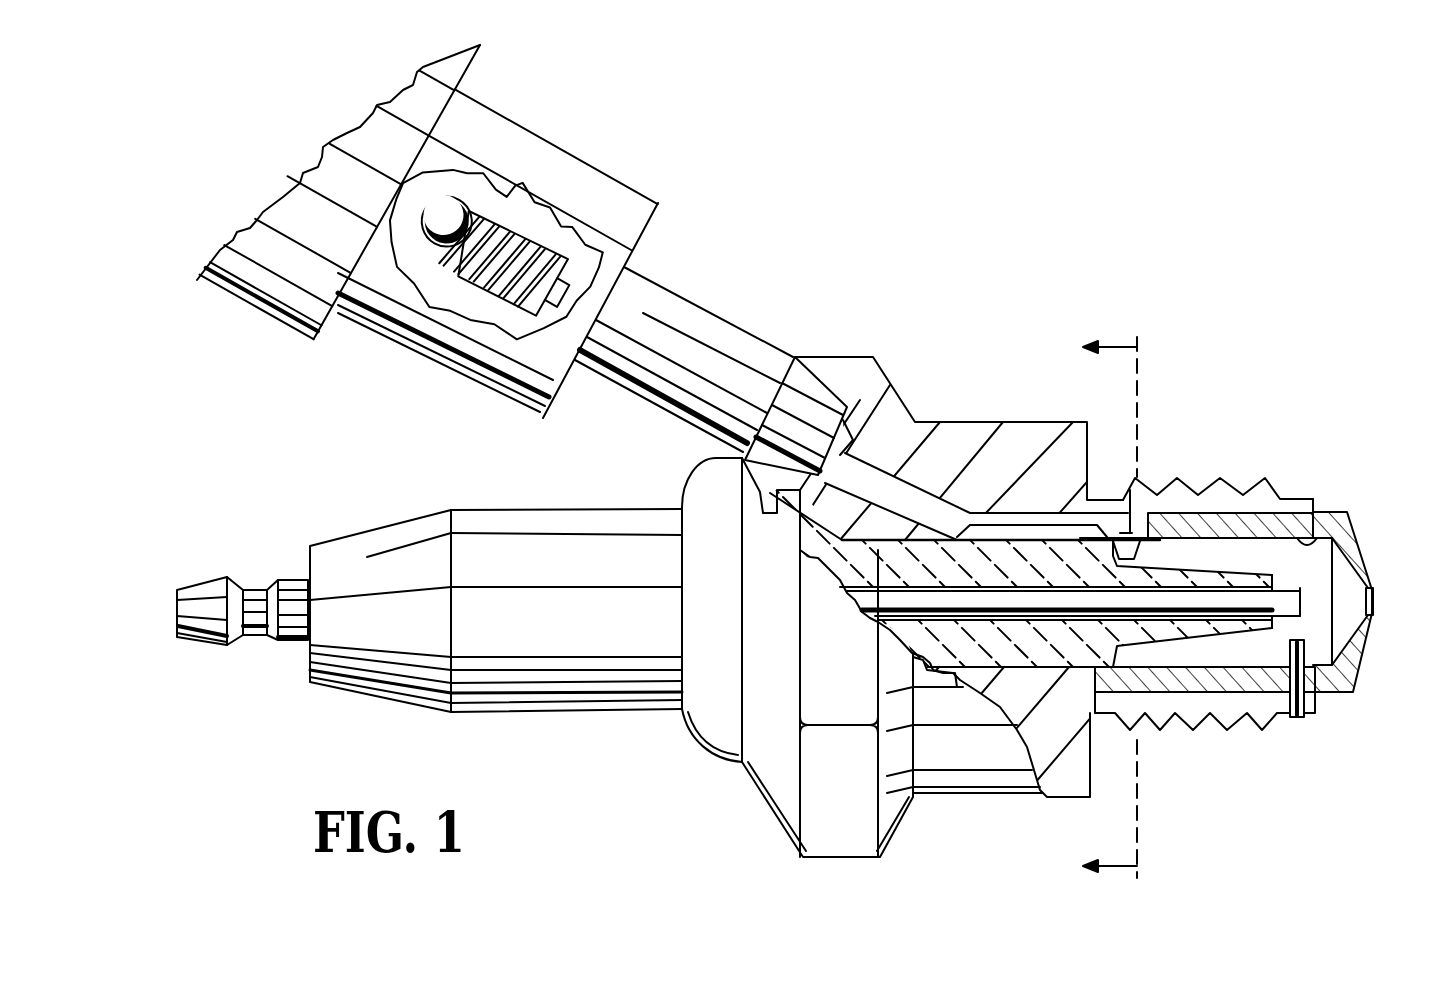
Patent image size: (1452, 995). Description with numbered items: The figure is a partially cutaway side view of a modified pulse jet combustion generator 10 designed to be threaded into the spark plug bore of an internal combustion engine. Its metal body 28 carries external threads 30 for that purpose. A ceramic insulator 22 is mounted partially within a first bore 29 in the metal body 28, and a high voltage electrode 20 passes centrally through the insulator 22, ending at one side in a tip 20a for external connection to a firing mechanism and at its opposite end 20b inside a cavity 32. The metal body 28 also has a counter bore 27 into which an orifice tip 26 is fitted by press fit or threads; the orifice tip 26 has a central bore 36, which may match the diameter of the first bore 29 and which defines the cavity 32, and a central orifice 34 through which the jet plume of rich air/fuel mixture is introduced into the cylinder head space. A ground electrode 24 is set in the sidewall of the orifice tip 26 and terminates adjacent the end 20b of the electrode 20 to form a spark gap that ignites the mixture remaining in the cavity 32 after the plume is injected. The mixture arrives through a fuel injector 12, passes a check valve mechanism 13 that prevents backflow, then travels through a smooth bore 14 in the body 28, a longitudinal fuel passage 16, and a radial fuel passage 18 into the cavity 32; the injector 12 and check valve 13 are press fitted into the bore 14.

The pulse jet combustion generator 10 is at (1005, 263).
The fuel injector 12 is at (287, 335).
The check valve mechanism 13 is at (470, 210).
The bore 14 is at (808, 398).
The longitudinal fuel passage 16 is at (933, 457).
The radial fuel passage 18 is at (1160, 478).
The high voltage electrode 20 is at (213, 590).
The tip 20a is at (177, 617).
The opposite end 20b is at (1335, 540).
The ceramic insulator 22 is at (380, 695).
The ground electrode 24 is at (1302, 718).
The orifice tip 26 is at (1360, 685).
The counter bore 27 is at (1215, 505).
The metal body 28 is at (913, 420).
The first bore 29 is at (1137, 722).
The external threads 30 is at (1245, 480).
The cavity 32 is at (1272, 657).
The central orifice 34 is at (1375, 602).
The central bore 36 is at (1330, 512).